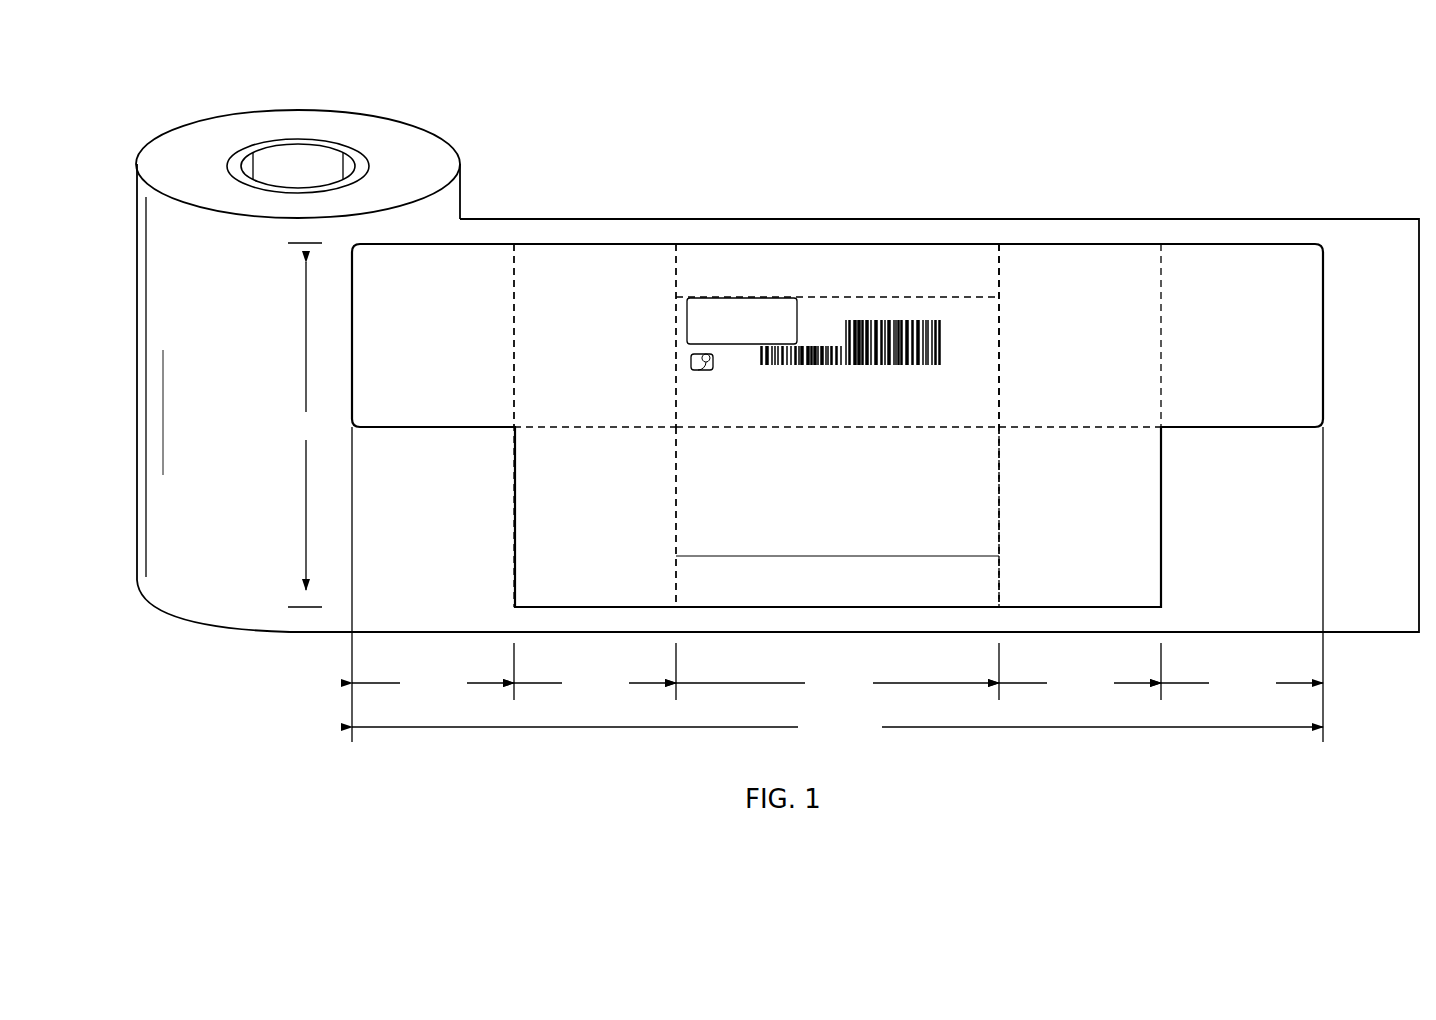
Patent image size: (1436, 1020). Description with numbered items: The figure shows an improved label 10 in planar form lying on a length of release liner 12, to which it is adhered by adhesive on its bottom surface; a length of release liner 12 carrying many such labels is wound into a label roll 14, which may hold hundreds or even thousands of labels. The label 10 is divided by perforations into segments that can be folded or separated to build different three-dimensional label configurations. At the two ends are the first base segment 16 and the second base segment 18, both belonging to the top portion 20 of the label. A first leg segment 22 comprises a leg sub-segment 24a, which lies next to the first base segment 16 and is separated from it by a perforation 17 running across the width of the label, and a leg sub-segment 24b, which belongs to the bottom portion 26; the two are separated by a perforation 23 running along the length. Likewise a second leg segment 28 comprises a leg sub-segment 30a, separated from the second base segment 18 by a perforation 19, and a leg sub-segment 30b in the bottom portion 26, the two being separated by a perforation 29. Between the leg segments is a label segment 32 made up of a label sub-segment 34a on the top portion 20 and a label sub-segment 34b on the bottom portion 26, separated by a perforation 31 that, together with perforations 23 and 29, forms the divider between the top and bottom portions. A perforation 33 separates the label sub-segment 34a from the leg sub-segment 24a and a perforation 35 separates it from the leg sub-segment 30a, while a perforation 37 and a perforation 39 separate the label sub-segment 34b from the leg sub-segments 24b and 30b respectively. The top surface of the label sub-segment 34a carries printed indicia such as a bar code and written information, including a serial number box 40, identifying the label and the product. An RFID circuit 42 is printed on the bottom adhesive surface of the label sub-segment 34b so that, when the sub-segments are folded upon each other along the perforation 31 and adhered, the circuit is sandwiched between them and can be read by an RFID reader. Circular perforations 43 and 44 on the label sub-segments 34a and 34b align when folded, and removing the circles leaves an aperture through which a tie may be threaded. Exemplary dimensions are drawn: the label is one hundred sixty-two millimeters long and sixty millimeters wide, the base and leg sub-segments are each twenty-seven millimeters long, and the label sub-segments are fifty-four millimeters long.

The label 10 is at (733, 182).
The release liner 12 is at (1368, 272).
The label roll 14 is at (344, 113).
The first base segment 16 is at (455, 270).
The perforation 17 is at (513, 350).
The second base segment 18 is at (1238, 272).
The perforation 19 is at (1161, 333).
The top portion 20 is at (1330, 341).
The first leg segment 22 is at (600, 292).
The perforation 23 is at (612, 432).
The leg sub-segment 24a is at (610, 346).
The leg sub-segment 24b is at (610, 519).
The bottom portion 26 is at (1176, 523).
The second leg segment 28 is at (1110, 270).
The perforation 29 is at (1075, 431).
The leg sub-segment 30a is at (1097, 346).
The leg sub-segment 30b is at (1097, 588).
The perforation 31 is at (945, 432).
The label segment 32 is at (934, 300).
The perforation 33 is at (676, 283).
The label sub-segment 34a is at (877, 263).
The label sub-segment 34b is at (902, 588).
The perforation 35 is at (1000, 286).
The perforation 37 is at (676, 583).
The perforation 39 is at (1000, 520).
The serial number box 40 is at (797, 314).
The RFID circuit 42 is at (808, 545).
The circular perforation 43 is at (975, 332).
The circular perforation 44 is at (968, 511).